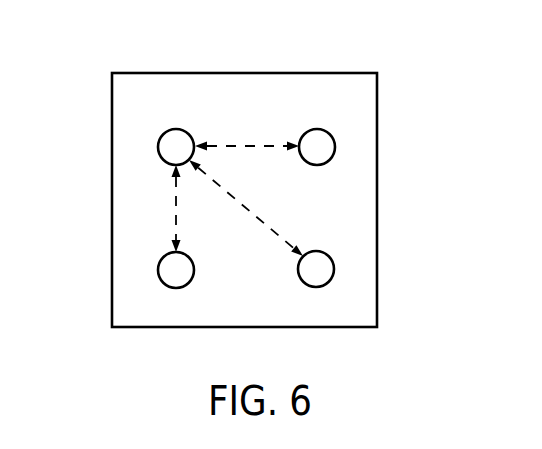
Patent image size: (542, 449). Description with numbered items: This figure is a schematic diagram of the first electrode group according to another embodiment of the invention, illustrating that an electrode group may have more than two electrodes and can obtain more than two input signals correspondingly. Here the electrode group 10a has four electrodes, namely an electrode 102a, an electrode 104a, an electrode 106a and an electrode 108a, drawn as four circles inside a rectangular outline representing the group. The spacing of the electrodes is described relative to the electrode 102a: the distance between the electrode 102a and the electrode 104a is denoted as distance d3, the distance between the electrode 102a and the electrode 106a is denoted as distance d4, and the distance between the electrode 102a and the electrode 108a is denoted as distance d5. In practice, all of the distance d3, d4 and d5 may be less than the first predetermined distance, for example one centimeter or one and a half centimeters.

The electrode group 10a is at (92, 27).
The electrode 102a is at (158, 150).
The electrode 104a is at (335, 147).
The electrode 106a is at (158, 274).
The electrode 108a is at (334, 270).
The distance d3 is at (247, 125).
The distance d4 is at (159, 208).
The distance d5 is at (246, 208).